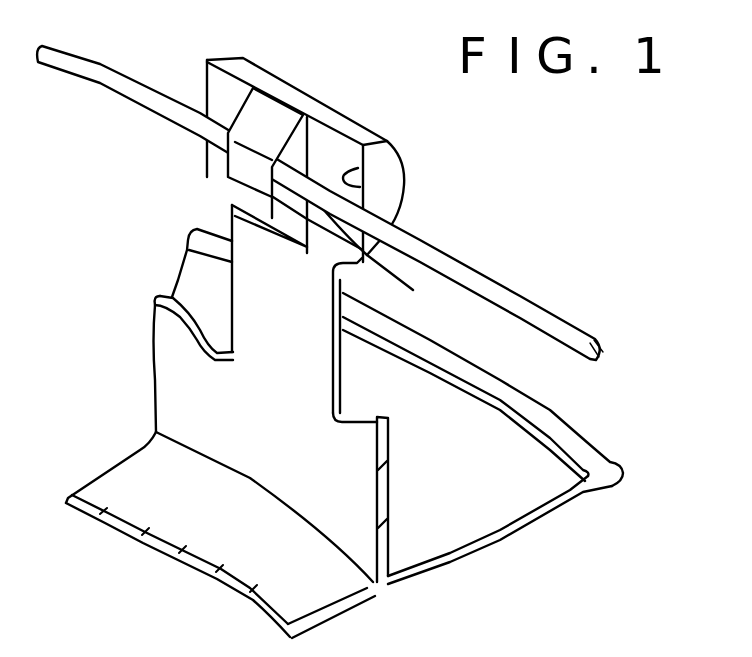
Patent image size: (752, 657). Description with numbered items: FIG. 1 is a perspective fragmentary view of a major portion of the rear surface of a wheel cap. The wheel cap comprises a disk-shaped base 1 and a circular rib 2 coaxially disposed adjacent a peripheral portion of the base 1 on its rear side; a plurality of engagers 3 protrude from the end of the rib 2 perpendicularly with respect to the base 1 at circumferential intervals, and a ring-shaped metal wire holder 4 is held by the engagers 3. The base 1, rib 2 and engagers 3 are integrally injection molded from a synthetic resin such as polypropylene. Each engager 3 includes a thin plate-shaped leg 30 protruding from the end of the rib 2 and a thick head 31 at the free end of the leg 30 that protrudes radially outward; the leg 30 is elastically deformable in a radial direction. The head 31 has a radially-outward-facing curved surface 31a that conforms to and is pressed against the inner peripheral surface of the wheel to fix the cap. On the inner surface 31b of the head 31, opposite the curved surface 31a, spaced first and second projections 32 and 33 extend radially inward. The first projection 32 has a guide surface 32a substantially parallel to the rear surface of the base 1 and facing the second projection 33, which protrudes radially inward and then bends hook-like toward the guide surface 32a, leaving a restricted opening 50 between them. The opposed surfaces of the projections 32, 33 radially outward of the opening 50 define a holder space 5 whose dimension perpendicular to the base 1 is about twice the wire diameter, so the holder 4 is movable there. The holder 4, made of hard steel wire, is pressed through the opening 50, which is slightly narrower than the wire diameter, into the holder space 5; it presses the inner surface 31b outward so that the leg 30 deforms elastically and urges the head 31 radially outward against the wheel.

The base 1 is at (477, 503).
The circular rib 2 is at (157, 424).
The engager 3 is at (332, 143).
The wire holder 4 is at (540, 308).
The holder space 5 is at (440, 319).
The leg 30 is at (313, 362).
The head 31 is at (233, 65).
The curved surface 31a is at (345, 111).
The inner surface 31b is at (365, 187).
The first projection 32 is at (297, 228).
The guide surface 32a is at (205, 176).
The second projection 33 is at (277, 118).
The opening 50 is at (200, 220).